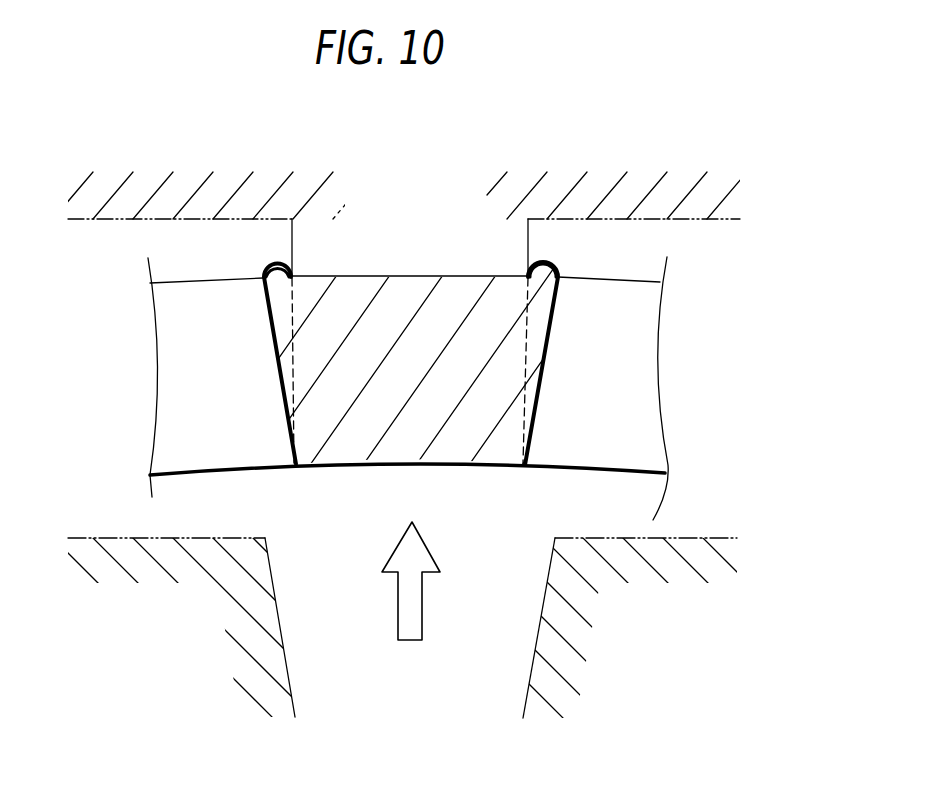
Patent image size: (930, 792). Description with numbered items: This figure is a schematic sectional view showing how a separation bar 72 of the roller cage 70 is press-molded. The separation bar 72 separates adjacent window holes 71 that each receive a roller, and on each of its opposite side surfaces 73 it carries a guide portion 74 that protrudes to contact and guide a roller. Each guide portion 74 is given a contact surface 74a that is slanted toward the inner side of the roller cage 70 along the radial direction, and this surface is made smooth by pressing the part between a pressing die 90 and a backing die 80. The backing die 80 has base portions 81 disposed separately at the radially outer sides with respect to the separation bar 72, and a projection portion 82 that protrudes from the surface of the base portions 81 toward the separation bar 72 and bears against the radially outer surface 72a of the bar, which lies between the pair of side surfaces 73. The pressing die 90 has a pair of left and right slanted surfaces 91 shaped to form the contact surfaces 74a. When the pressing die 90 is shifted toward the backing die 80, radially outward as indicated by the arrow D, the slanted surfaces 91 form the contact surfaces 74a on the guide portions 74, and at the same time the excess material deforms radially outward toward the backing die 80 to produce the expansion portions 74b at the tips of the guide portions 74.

The roller cage 70 is at (750, 287).
The window hole 71 is at (223, 400).
The separation bar 72 is at (429, 386).
The surface of the separation bar 72a is at (463, 275).
The side surface 73 is at (287, 389).
The guide portion 74 is at (260, 335).
The contact surface 74a is at (288, 428).
The expansion portion 74b is at (273, 268).
The backing die 80 is at (106, 224).
The base portion 81 is at (667, 172).
The projection portion 82 is at (388, 250).
The pressing die 90 is at (103, 524).
The slanted surface 91 is at (277, 603).
The arrow D is at (403, 627).